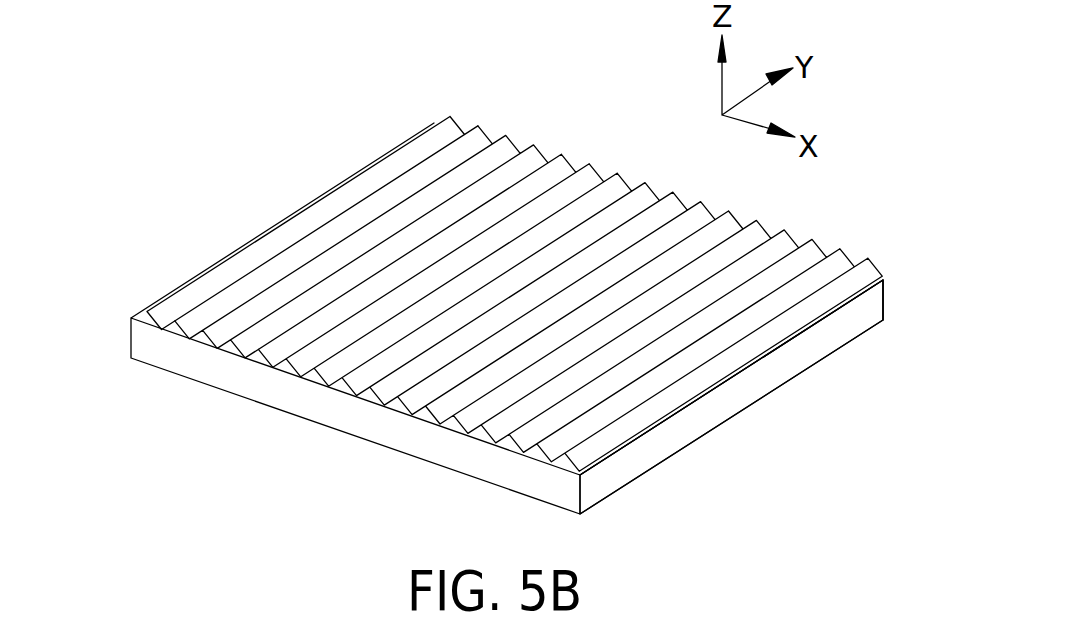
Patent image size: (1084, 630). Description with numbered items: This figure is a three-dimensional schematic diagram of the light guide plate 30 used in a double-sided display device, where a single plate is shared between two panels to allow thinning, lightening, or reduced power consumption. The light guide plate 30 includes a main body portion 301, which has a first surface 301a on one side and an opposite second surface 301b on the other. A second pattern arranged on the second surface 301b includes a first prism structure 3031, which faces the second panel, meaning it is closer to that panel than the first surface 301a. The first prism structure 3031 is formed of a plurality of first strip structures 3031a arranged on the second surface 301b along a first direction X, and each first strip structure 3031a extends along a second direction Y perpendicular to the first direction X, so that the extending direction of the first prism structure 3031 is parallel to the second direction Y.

The light guide plate 30 is at (333, 142).
The main body portion 301 is at (139, 338).
The first surface 301a is at (852, 340).
The second surface 301b is at (878, 279).
The first prism structure 3031 is at (212, 277).
The first strip structure 3031a is at (312, 223).